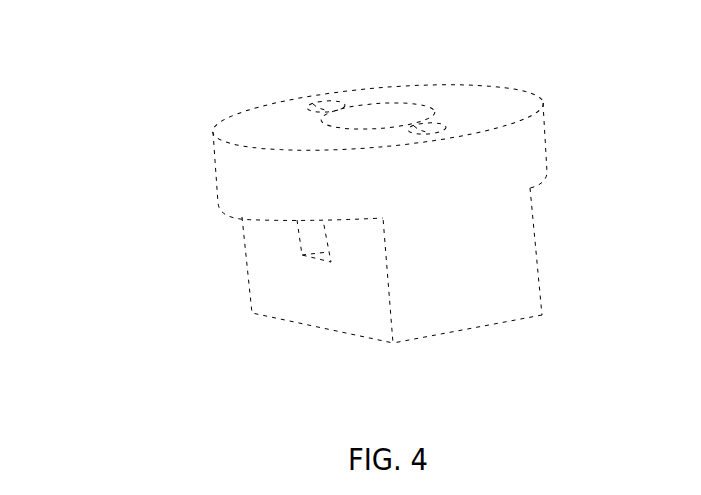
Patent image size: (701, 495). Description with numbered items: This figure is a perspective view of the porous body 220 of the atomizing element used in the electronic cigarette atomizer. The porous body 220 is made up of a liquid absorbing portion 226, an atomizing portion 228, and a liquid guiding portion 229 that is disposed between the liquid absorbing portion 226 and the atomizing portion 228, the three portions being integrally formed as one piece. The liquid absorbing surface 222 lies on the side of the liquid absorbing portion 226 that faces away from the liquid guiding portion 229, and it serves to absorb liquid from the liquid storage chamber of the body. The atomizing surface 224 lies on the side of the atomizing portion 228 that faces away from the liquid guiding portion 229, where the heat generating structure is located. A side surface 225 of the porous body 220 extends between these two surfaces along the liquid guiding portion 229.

The porous body 220 is at (372, 207).
The liquid absorbing surface 222 is at (452, 100).
The atomizing surface 224 is at (468, 334).
The side surface 225 is at (275, 237).
The liquid absorbing portion 226 is at (247, 167).
The atomizing portion 228 is at (508, 224).
The liquid guiding portion 229 is at (323, 303).